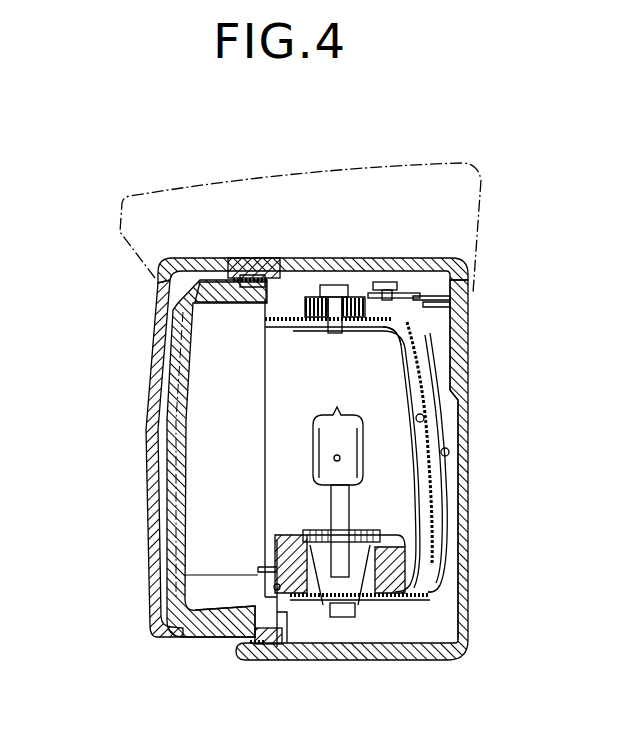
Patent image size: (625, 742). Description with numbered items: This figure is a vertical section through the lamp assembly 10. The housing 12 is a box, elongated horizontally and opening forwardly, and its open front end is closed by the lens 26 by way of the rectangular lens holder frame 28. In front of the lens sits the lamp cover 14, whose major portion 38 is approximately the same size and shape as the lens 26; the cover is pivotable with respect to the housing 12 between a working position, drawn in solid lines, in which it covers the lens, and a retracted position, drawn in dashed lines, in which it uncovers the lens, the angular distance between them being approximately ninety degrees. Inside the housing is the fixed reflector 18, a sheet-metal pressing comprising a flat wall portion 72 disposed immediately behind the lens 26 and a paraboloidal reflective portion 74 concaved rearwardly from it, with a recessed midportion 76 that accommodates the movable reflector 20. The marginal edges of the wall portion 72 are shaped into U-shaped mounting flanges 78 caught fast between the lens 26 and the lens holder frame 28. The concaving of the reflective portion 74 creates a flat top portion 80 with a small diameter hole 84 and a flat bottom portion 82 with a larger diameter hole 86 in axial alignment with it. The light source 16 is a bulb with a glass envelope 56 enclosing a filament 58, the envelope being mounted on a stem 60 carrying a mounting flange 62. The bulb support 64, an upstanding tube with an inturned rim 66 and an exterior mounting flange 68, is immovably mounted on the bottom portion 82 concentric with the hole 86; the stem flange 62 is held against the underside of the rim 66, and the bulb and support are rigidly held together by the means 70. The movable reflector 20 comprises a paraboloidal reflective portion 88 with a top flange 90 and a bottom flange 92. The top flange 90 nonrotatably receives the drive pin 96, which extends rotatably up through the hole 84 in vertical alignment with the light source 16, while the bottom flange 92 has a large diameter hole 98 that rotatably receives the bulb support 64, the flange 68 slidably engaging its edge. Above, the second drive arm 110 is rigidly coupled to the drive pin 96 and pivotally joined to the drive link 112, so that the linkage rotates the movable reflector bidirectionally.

The lamp assembly 10 is at (96, 270).
The housing 12 is at (390, 657).
The lamp cover 14 is at (160, 192).
The light source 16 is at (308, 492).
The fixed reflector 18 is at (453, 377).
The movable reflector 20 is at (400, 398).
The lens 26 is at (170, 452).
The lens holder frame 28 is at (257, 273).
The major portion 38 is at (145, 488).
The glass envelope 56 is at (317, 437).
The filament 58 is at (340, 458).
The stem 60 is at (352, 508).
The mounting flange 62 is at (362, 540).
The bulb support 64 is at (278, 542).
The inturned rim 66 is at (303, 538).
The mounting flange 68 is at (277, 562).
The means 70 is at (380, 603).
The flat wall portion 72 is at (260, 633).
The reflective portion 74 is at (384, 384).
The recessed midportion 76 is at (450, 453).
The mounting flanges 78 is at (255, 277).
The flat top portion 80 is at (282, 330).
The flat bottom portion 82 is at (428, 592).
The small diameter hole 84 is at (327, 337).
The large diameter hole 86 is at (307, 597).
The reflective portion 88 is at (437, 417).
The top flange 90 is at (303, 333).
The bottom flange 92 is at (258, 563).
The drive pin 96 is at (333, 332).
The large diameter hole 98 is at (267, 588).
The second drive arm 110 is at (405, 290).
The drive link 112 is at (398, 287).